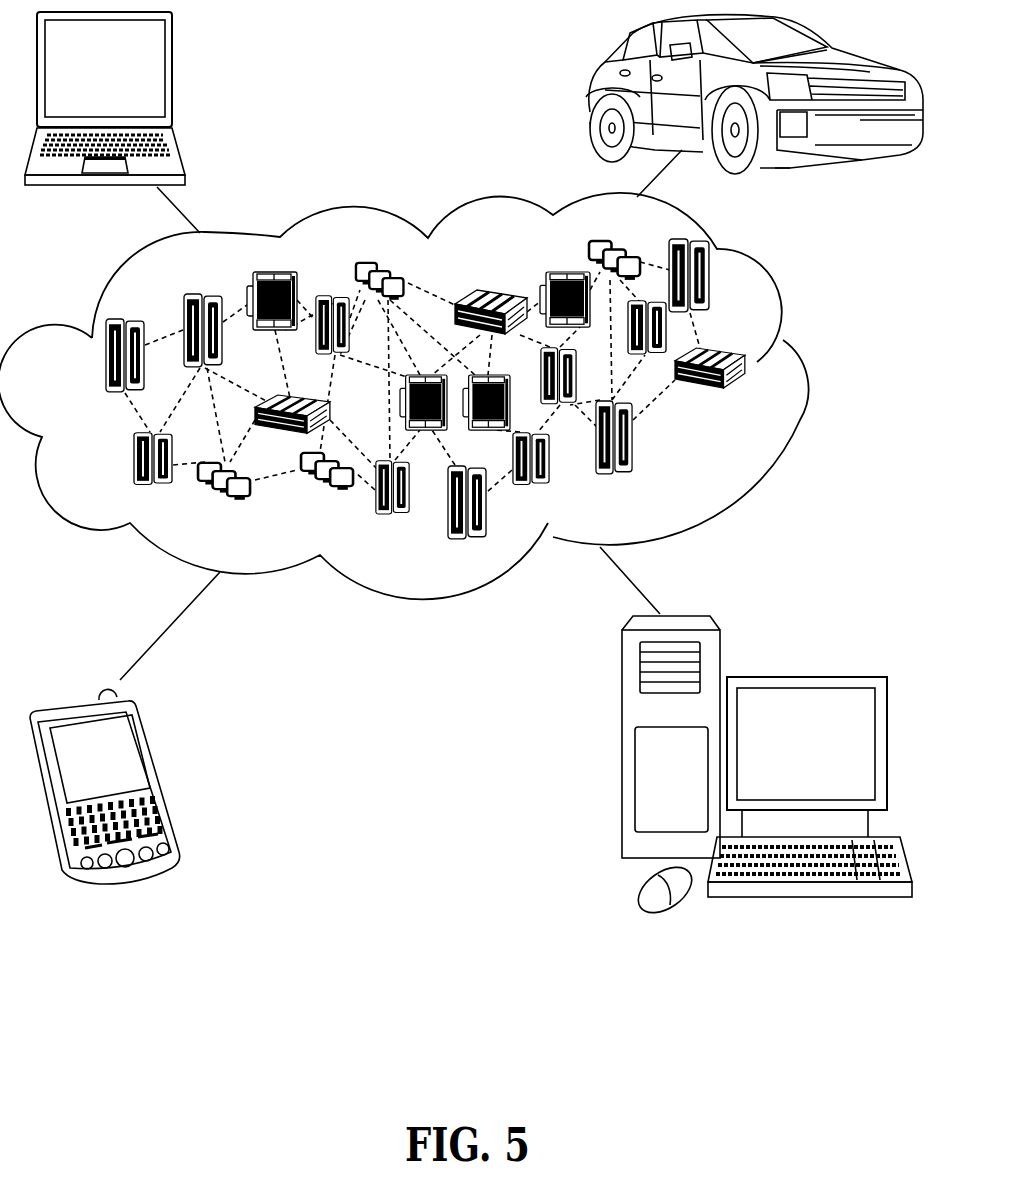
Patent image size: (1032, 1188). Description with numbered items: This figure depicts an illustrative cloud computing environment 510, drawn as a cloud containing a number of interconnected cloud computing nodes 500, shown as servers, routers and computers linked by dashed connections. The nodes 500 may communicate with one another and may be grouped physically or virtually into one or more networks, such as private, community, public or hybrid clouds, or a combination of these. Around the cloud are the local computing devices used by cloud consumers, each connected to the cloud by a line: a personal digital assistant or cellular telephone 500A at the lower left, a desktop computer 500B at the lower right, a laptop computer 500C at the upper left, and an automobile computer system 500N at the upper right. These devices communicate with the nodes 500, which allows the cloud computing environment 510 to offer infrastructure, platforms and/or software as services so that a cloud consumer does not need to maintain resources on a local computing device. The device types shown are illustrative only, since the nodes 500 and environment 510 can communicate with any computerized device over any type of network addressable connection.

The cloud computing nodes 500 is at (437, 396).
The cloud computing environment 510 is at (808, 367).
The personal digital assistant (PDA) or cellular telephone 500A is at (162, 777).
The desktop computer 500B is at (803, 677).
The laptop computer 500C is at (173, 74).
The automobile computer system 500N is at (592, 94).